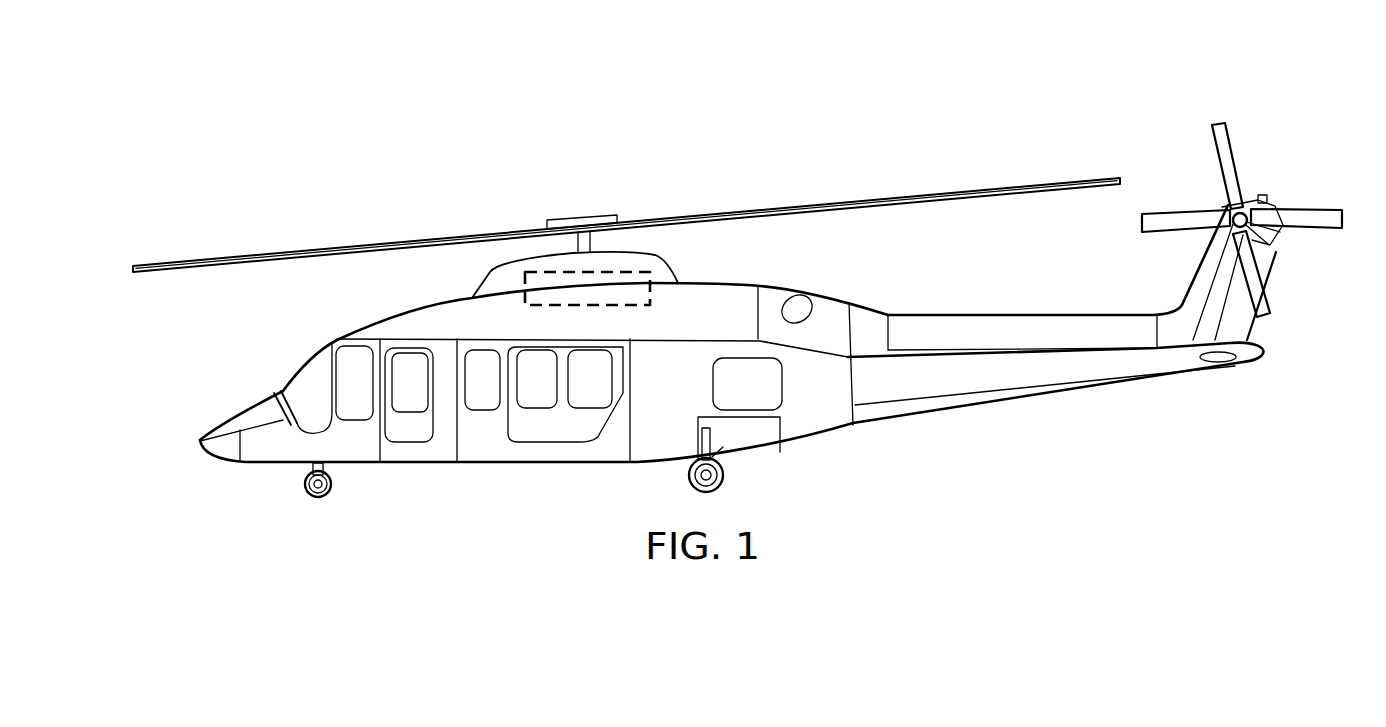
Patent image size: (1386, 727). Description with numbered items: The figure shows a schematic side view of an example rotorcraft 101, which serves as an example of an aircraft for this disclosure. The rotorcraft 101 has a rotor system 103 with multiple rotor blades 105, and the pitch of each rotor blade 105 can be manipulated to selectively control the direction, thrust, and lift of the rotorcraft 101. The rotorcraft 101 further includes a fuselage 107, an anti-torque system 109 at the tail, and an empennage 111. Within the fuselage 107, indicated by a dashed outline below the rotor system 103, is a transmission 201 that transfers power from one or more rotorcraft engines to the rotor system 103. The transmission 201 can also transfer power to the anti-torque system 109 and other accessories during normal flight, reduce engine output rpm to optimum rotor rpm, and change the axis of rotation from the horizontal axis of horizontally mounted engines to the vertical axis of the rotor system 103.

The rotorcraft 101 is at (325, 111).
The rotor system 103 is at (599, 190).
The rotor blades 105 is at (320, 247).
The fuselage 107 is at (493, 463).
The anti-torque system 109 is at (1270, 168).
The empennage 111 is at (1067, 397).
The transmission 201 is at (558, 272).